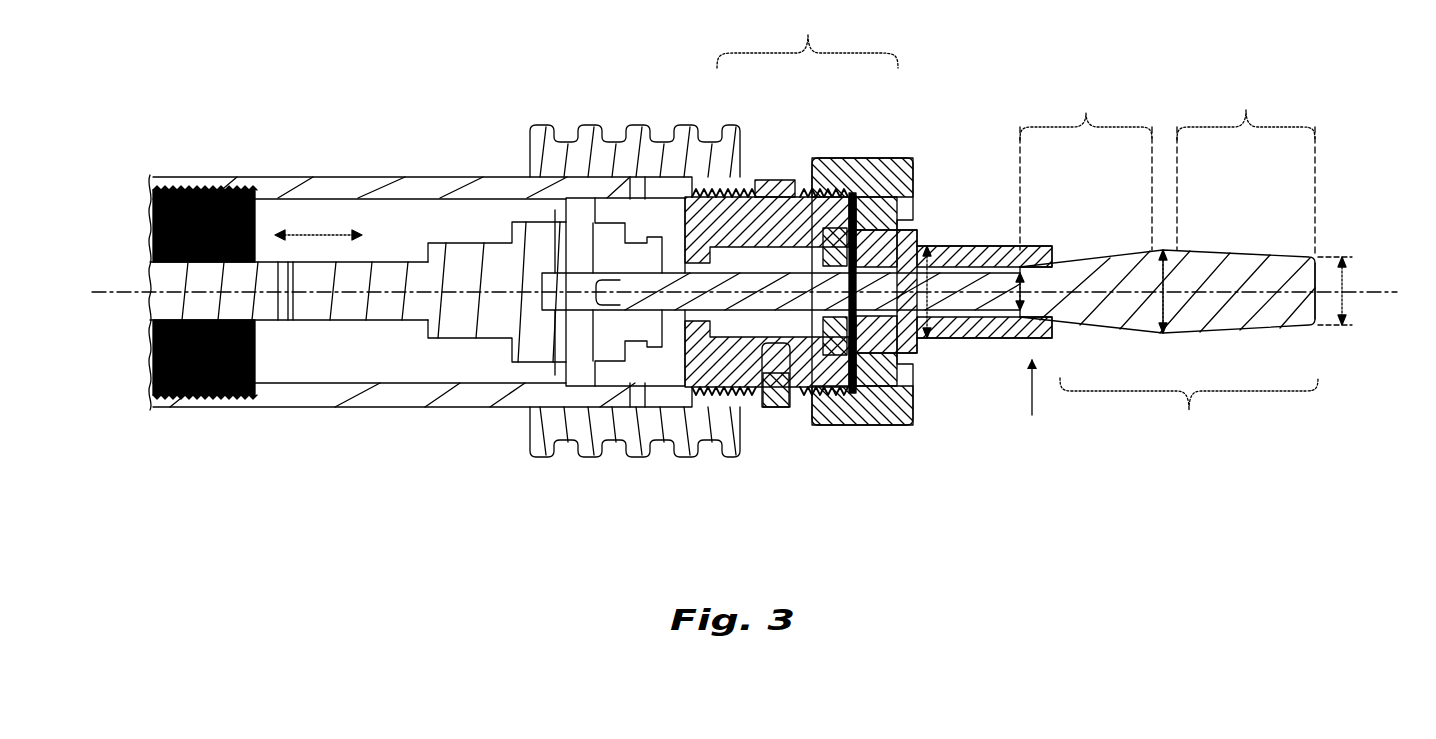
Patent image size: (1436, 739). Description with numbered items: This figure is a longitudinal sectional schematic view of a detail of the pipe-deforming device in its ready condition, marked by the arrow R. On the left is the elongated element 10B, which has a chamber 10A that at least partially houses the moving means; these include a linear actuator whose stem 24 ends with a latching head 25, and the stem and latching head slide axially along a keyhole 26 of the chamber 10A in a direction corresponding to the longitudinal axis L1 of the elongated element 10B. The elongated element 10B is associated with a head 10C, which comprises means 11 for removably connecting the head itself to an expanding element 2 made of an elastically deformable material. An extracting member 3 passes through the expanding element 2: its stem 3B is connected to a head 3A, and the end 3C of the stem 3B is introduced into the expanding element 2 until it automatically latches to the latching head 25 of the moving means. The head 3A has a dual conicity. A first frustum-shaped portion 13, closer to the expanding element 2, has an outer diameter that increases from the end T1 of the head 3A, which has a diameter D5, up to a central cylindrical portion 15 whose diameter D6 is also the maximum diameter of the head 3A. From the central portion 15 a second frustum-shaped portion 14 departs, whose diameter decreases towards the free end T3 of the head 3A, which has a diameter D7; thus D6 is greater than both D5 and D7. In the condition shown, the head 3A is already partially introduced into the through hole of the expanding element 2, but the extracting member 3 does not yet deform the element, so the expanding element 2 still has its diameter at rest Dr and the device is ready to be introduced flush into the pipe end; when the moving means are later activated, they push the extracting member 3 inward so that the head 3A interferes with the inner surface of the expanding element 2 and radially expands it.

The longitudinal axis L1 is at (122, 291).
The keyhole 26 is at (338, 200).
The elongated element 10B is at (390, 174).
The chamber 10A is at (395, 355).
The head 10C is at (791, 203).
The connecting means 11 is at (866, 156).
The expanding element 2 is at (928, 243).
The end of the head closer to the expanding element T1 is at (1020, 266).
The central cylindrical portion 15 is at (1161, 248).
The first frustum-shaped portion 13 is at (1086, 164).
The second frustum-shaped portion 14 is at (1246, 166).
The extracting member 3 is at (1228, 249).
The free end of the head T3 is at (1316, 262).
The diameter at the free end D7 is at (1343, 283).
The diameter at rest Dr is at (932, 305).
The diameter at end T1 D5 is at (1026, 302).
The ready condition R is at (1030, 406).
The maximum diameter of the head D6 is at (1170, 330).
The head of the extracting member 3A is at (1189, 417).
The stem 24 is at (307, 307).
The latching head 25 is at (567, 340).
The end of the stem 3C is at (622, 286).
The stem of the extracting member 3B is at (805, 297).